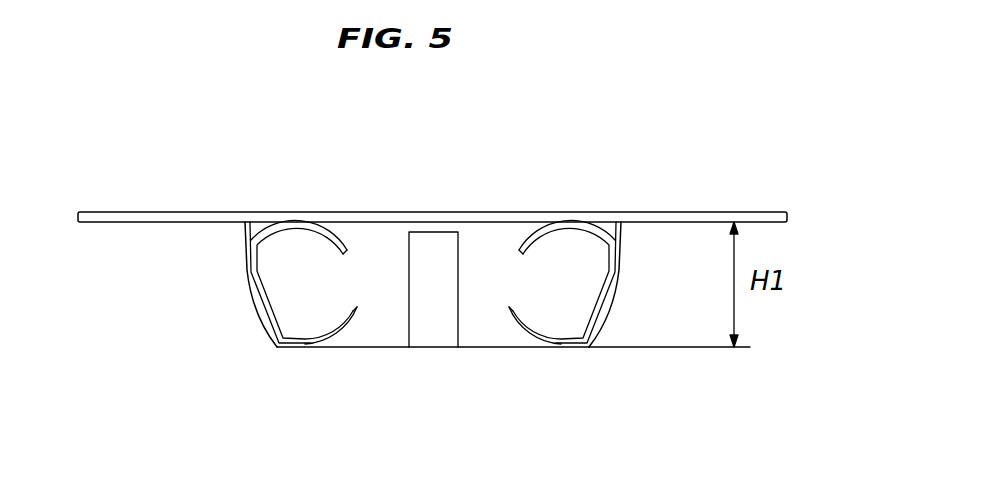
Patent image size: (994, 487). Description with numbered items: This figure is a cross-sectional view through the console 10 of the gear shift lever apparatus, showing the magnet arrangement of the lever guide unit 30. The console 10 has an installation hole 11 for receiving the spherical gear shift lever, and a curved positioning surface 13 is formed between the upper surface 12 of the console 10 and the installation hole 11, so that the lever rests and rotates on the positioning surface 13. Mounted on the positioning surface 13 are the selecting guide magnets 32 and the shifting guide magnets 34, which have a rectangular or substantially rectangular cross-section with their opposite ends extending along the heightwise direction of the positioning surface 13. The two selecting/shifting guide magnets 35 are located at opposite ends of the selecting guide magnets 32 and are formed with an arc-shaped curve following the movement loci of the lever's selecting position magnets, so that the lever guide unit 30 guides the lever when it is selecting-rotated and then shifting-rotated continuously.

The console 10 is at (608, 213).
The installation hole 11 is at (523, 348).
The upper surface 12 is at (196, 220).
The positioning surface 13 is at (384, 236).
The lever guide unit 30 is at (522, 229).
The selecting guide magnets 32 is at (248, 283).
The shifting guide magnets 34 is at (437, 326).
The selecting/shifting guide magnets 35 is at (320, 228).